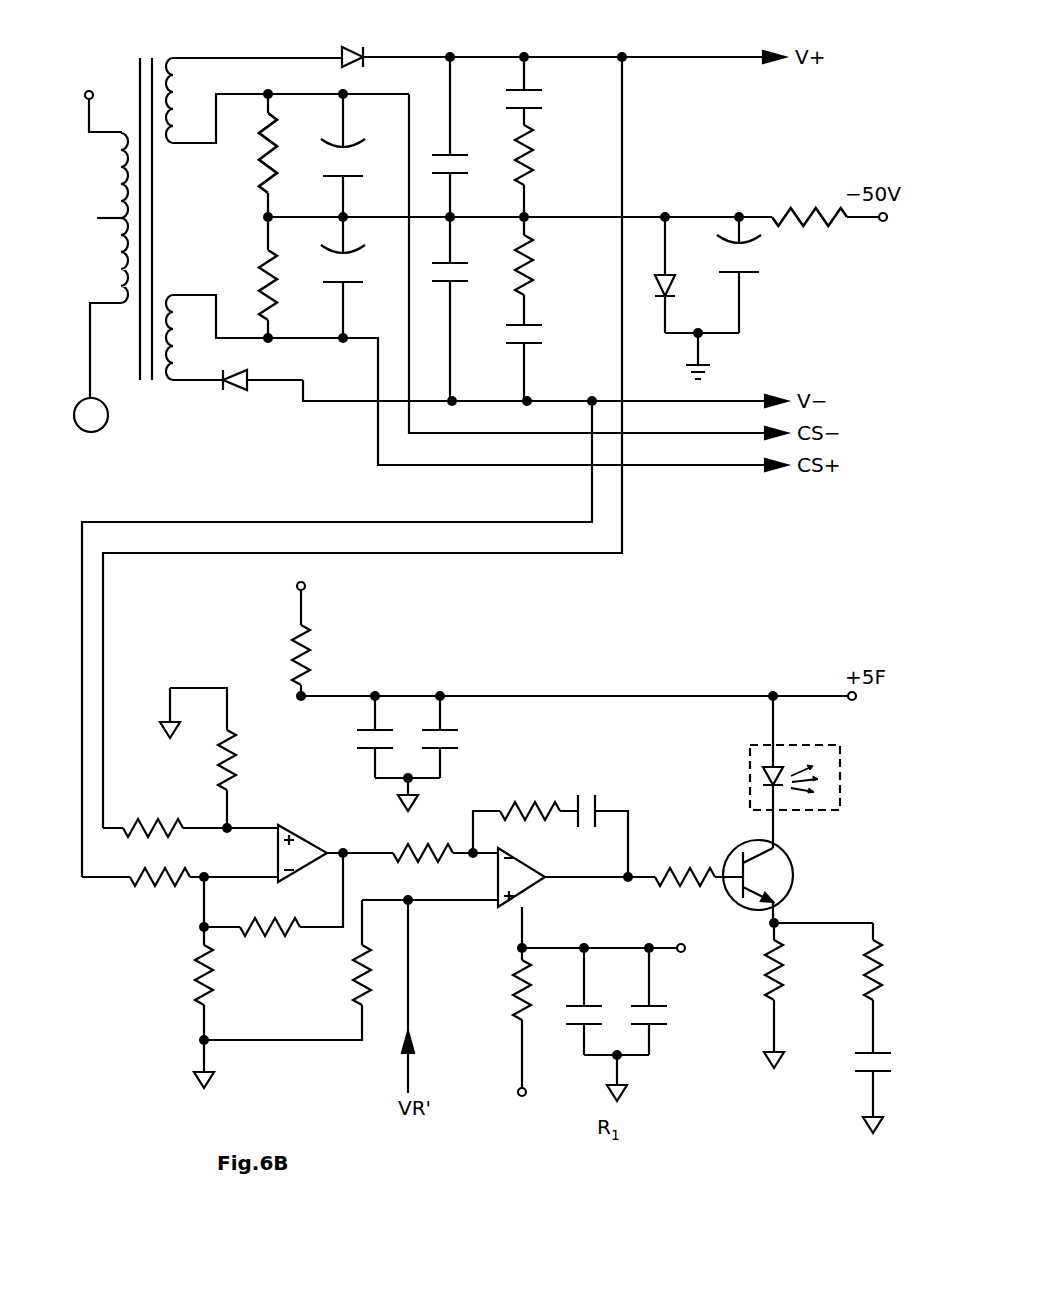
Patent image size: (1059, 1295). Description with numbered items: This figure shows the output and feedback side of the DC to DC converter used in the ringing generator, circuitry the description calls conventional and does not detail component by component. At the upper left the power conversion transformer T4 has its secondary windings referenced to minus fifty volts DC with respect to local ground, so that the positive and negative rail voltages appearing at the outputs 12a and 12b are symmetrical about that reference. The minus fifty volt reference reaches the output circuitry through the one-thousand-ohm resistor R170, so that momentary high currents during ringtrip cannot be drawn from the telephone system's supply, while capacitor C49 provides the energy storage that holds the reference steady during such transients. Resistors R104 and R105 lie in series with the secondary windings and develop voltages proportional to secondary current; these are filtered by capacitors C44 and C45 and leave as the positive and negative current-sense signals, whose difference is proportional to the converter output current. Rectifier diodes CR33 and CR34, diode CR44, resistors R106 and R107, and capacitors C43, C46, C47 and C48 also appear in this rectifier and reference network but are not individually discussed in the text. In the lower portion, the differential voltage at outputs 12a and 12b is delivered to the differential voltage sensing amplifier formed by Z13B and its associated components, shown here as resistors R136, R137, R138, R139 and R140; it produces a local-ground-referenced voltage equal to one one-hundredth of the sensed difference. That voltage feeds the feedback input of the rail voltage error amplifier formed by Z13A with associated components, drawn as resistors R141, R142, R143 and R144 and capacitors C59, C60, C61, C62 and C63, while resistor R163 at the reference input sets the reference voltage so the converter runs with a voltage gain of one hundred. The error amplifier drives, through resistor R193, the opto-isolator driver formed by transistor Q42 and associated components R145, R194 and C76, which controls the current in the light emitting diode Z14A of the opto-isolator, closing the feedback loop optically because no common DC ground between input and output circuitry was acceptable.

The power conversion transformer T4 is at (123, 229).
The output 12a is at (732, 401).
The output 12b is at (700, 40).
The rectifier diode CR33 is at (358, 42).
The rectifier diode CR34 is at (238, 399).
The diode CR44 is at (690, 275).
The resistor R104 is at (237, 155).
The resistor R105 is at (237, 277).
The resistor R106 is at (556, 171).
The resistor R107 is at (558, 271).
The resistor R170 is at (804, 202).
The electrolytic capacitor C43 is at (359, 155).
The capacitor C44 is at (359, 277).
The capacitor C45 is at (464, 137).
The capacitor C46 is at (467, 309).
The capacitor C47 is at (549, 91).
The capacitor C48 is at (549, 363).
The capacitor C49 is at (758, 275).
The resistor R141 is at (331, 639).
The capacitor C59 is at (354, 737).
The capacitor C60 is at (459, 737).
The resistor R138 is at (226, 758).
The resistor R136 is at (190, 817).
The resistor R137 is at (180, 894).
The resistor R140 is at (273, 909).
The resistor R139 is at (177, 1026).
The resistor R163 is at (287, 970).
The resistor R142 is at (412, 865).
The resistor R143 is at (525, 815).
The capacitor C61 is at (607, 828).
The resistor R144 is at (494, 1001).
The capacitor C62 is at (566, 1001).
The capacitor C63 is at (666, 1001).
The resistor R193 is at (685, 865).
The rail voltage error amplifier Z13A is at (539, 874).
The differential voltage sensing amplifier Z13B is at (324, 849).
The light emitting diode Z14A is at (810, 772).
The opto-isolator driver Q42 is at (783, 881).
The resistor R145 is at (743, 1015).
The resistor R194 is at (845, 988).
The capacitor C76 is at (855, 1115).